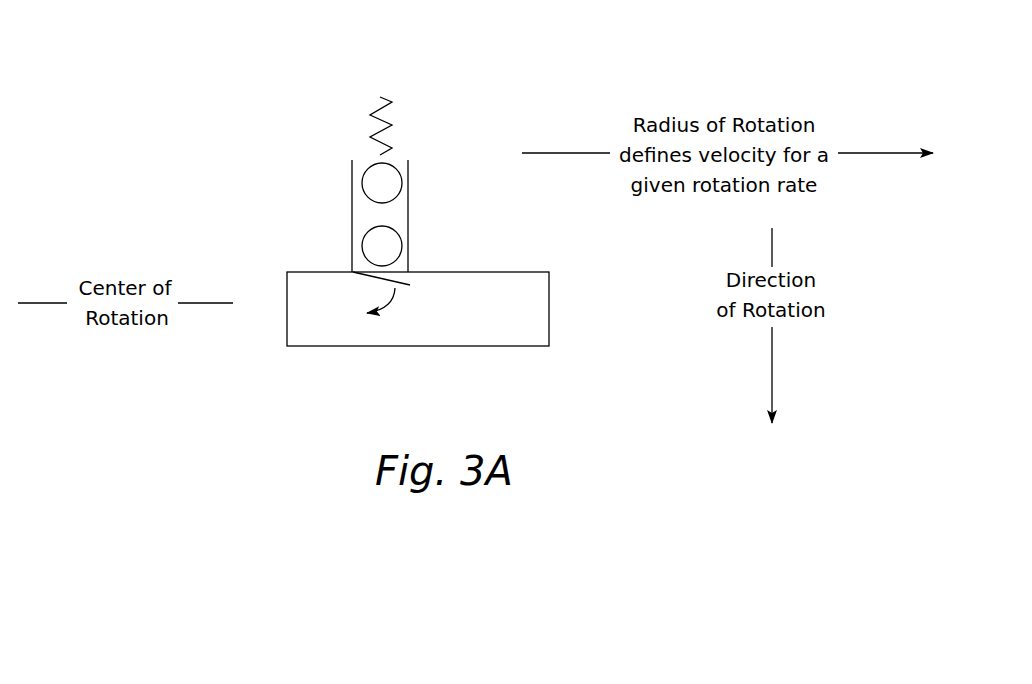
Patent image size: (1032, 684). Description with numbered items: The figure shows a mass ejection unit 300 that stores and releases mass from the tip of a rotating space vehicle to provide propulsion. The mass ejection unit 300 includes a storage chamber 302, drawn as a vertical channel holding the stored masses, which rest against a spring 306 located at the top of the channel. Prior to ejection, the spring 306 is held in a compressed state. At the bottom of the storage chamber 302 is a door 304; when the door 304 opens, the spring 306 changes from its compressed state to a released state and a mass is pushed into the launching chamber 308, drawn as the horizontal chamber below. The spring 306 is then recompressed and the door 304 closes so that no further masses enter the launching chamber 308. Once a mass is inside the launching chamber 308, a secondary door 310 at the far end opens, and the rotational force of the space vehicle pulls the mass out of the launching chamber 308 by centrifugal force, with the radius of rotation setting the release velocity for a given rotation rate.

The mass ejection unit 300 is at (143, 157).
The storage chamber 302 is at (342, 195).
The door 304 is at (362, 282).
The spring 306 is at (402, 118).
The launching chamber 308 is at (280, 317).
The secondary door 310 is at (552, 317).